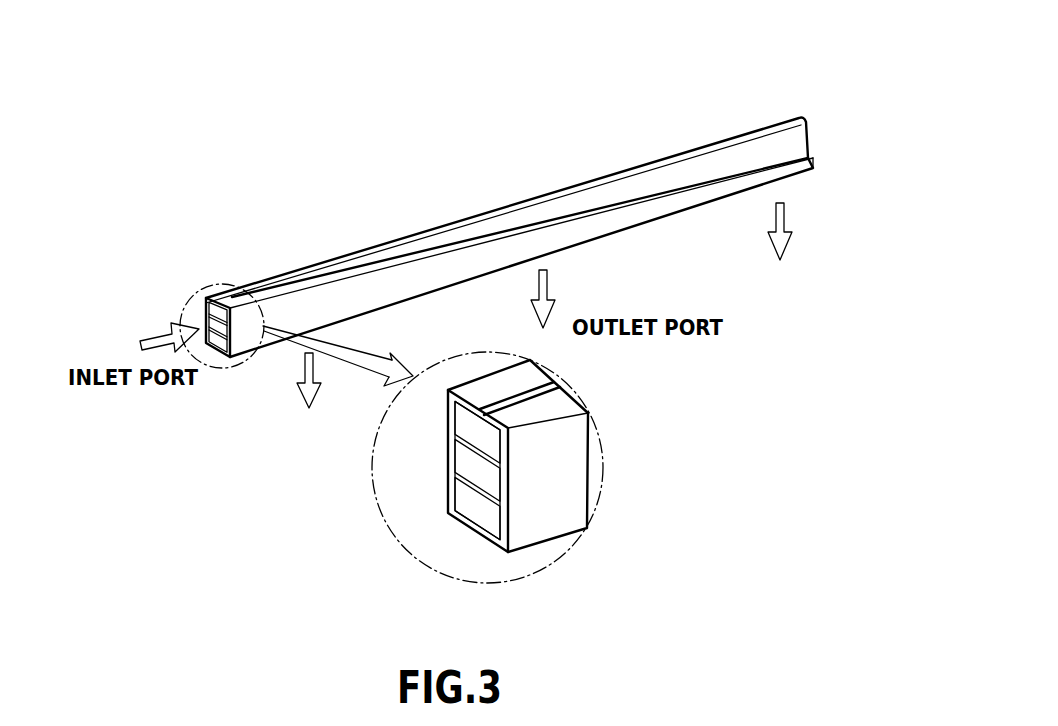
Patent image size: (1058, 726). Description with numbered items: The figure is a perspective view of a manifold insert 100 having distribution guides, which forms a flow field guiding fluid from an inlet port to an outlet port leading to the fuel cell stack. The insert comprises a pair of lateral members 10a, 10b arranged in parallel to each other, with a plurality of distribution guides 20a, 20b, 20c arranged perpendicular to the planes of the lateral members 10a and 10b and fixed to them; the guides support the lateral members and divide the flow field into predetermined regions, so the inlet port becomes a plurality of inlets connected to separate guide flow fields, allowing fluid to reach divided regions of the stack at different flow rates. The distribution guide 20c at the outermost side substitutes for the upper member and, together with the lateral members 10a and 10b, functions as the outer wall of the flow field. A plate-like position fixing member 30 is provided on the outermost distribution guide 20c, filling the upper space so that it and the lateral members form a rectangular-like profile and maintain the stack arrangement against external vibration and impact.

The manifold insert having distribution guides 100 is at (493, 207).
The position fixing member 30 is at (773, 142).
The lateral member 10a is at (543, 540).
The lateral member 10b is at (483, 371).
The distribution guide 20a is at (473, 501).
The distribution guide 20b is at (472, 462).
The distribution guide at the outermost side 20c is at (472, 408).